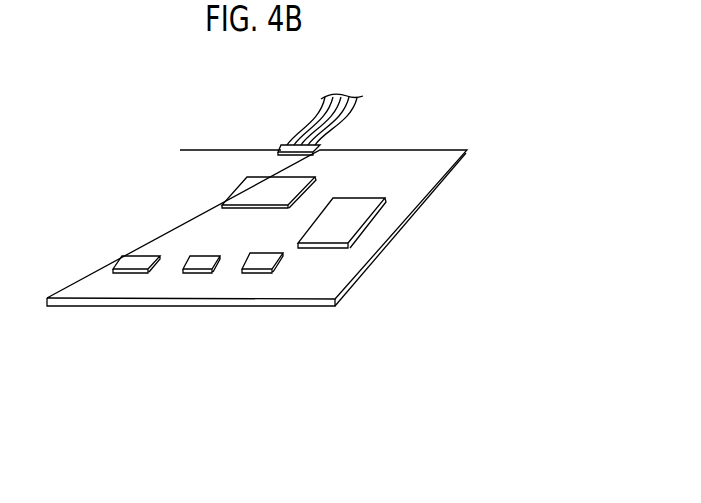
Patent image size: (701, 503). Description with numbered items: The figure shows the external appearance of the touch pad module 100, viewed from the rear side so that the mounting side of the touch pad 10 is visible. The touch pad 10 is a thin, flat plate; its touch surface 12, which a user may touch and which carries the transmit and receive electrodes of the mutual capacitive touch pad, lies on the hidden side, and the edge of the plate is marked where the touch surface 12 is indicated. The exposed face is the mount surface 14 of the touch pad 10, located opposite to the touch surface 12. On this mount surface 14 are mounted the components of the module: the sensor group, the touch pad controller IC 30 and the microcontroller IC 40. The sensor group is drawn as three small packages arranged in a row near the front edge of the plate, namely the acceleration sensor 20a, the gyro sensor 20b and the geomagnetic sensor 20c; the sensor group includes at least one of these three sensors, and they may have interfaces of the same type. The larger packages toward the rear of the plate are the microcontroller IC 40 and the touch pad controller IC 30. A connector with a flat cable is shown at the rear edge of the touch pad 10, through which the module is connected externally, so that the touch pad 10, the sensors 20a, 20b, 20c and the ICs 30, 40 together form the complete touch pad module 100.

The touch pad module 100 is at (281, 441).
The touch pad 10 is at (59, 303).
The touch surface 12 is at (440, 184).
The mount surface 14 is at (441, 163).
The acceleration sensor 20a is at (130, 267).
The gyro sensor 20b is at (195, 267).
The geomagnetic sensor 20c is at (258, 267).
The touch pad controller IC 30 is at (350, 210).
The microcontroller IC 40 is at (250, 195).